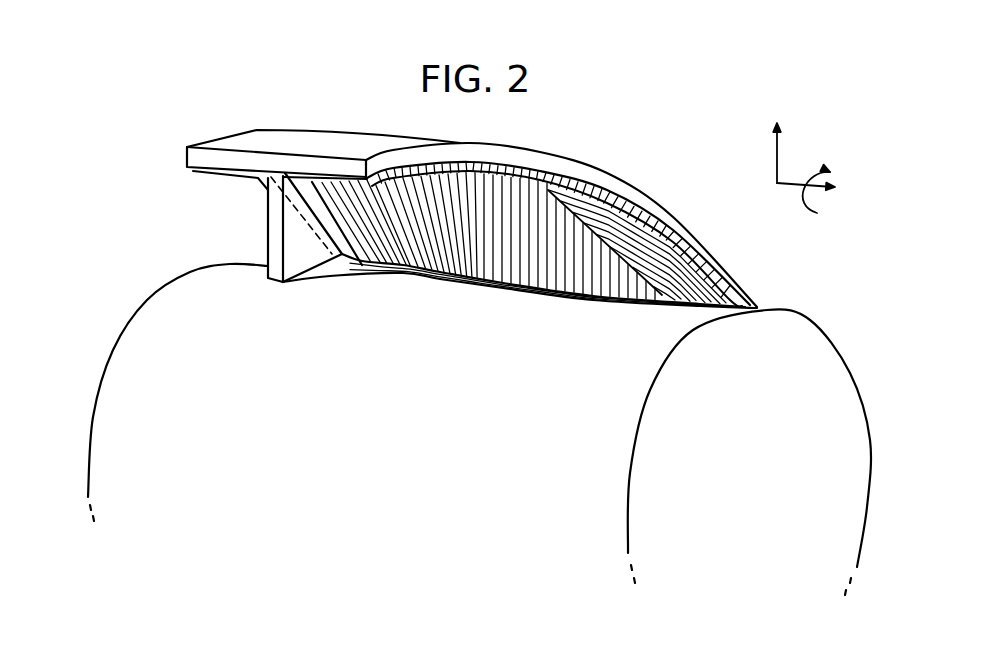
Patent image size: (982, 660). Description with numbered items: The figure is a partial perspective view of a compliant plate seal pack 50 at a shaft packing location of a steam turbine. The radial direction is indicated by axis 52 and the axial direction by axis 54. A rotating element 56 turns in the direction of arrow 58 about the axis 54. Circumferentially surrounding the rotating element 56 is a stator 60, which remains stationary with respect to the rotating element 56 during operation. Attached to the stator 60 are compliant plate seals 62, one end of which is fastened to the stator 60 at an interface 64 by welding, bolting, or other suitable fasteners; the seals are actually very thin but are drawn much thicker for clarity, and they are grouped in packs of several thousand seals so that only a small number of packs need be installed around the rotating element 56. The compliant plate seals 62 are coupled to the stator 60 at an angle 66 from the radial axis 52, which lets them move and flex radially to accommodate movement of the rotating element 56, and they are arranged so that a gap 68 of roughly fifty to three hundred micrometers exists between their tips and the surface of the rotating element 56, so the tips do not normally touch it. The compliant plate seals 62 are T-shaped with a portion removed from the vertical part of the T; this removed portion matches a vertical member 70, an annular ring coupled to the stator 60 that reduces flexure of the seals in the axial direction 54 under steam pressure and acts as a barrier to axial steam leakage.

The compliant plate seal pack 50 is at (683, 153).
The axis 52 is at (777, 153).
The axis 54 is at (793, 183).
The rotating element 56 is at (232, 265).
The arrow 58 is at (803, 165).
The stator 60 is at (257, 132).
The compliant plate seals 62 is at (193, 171).
The interface 64 is at (188, 166).
The angle 66 is at (315, 226).
The gap 68 is at (393, 233).
The vertical member 70 is at (273, 282).